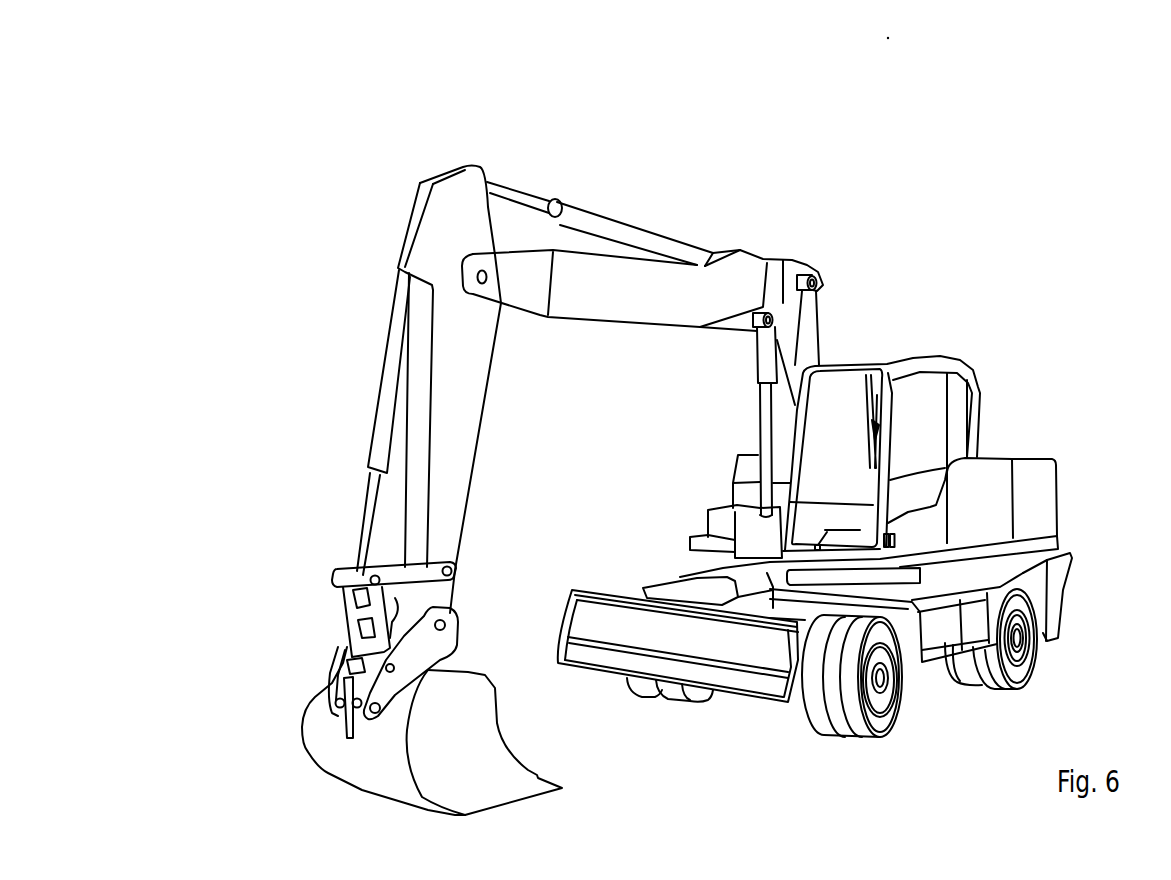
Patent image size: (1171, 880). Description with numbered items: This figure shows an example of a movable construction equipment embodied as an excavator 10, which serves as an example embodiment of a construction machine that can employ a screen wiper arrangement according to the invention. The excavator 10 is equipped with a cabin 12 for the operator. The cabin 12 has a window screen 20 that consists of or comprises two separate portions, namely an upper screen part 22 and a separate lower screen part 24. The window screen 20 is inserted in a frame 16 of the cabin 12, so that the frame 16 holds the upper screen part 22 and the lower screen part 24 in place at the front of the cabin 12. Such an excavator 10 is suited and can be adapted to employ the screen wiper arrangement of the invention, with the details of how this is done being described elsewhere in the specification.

The excavator 10 is at (376, 181).
The cabin 12 is at (921, 343).
The frame 16 is at (790, 457).
The window screen 20 is at (807, 440).
The upper screen part 22 is at (843, 400).
The lower screen part 24 is at (803, 513).